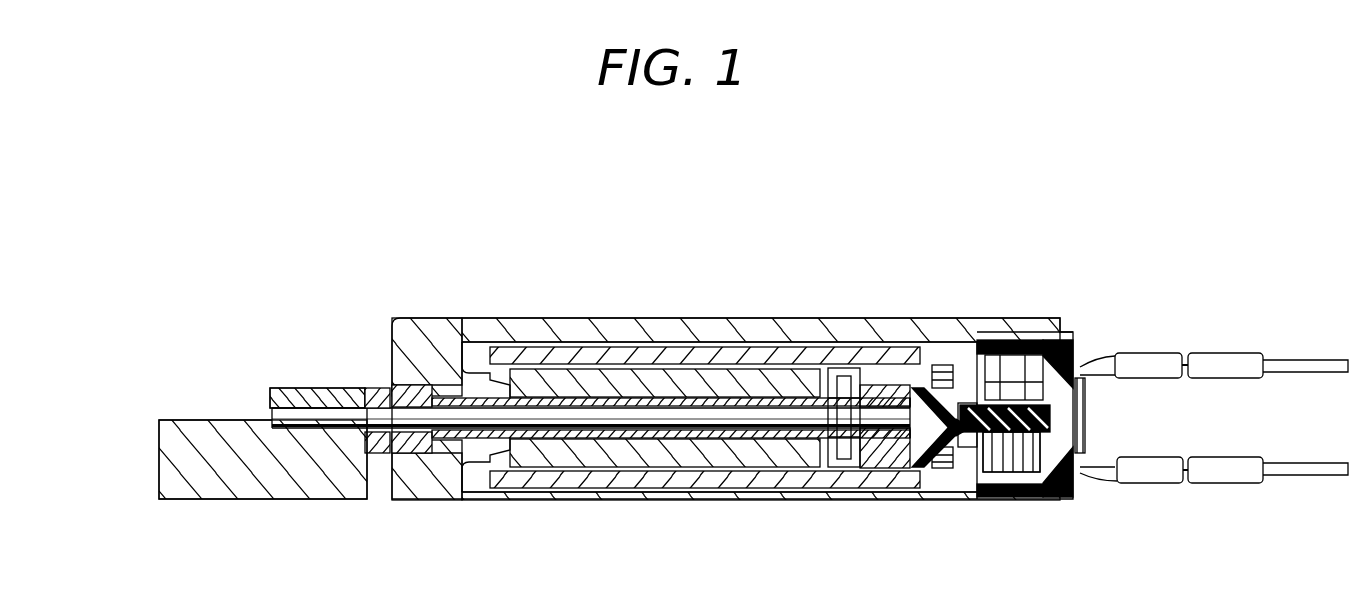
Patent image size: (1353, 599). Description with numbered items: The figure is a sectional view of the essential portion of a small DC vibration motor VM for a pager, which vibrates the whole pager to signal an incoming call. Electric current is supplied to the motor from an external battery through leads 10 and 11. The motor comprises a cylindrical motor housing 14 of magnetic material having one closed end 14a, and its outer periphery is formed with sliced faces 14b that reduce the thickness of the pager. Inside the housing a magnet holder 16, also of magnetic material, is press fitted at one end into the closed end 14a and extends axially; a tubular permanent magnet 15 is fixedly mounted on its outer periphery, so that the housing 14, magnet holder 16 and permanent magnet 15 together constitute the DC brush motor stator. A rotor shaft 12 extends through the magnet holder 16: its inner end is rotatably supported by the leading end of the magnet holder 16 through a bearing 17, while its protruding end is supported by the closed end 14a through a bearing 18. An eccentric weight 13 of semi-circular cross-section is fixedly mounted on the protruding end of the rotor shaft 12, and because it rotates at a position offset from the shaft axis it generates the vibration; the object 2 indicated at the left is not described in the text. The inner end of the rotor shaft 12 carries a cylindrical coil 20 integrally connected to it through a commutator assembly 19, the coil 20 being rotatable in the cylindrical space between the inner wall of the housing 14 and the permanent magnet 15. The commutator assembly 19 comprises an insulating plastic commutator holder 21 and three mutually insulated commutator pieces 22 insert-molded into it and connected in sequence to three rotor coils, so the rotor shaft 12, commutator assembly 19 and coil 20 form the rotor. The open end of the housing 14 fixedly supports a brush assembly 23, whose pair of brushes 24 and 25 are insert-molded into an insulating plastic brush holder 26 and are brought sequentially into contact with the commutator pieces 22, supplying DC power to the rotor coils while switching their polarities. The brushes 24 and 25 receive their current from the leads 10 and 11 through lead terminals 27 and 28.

The object to be measured / contact member 2 is at (138, 440).
The lead 10 is at (1245, 362).
The lead 11 is at (1235, 470).
The rotor shaft 12 is at (303, 413).
The eccentric weight 13 is at (200, 440).
The motor housing 14 is at (696, 310).
The closed end 14a is at (400, 322).
The sliced face 14b is at (568, 502).
The permanent magnet 15 is at (603, 378).
The magnet holder 16 is at (460, 443).
The bearing 17 is at (828, 370).
The bearing 18 is at (403, 383).
The commutator assembly 19 is at (942, 356).
The coil 20 is at (650, 455).
The commutator holder 21 is at (875, 470).
The commutator piece 22 is at (993, 375).
The brush assembly 23 is at (1093, 330).
The brush 24 is at (990, 472).
The brush 25 is at (1028, 504).
The brush holder 26 is at (1062, 492).
The lead terminal 27 is at (1093, 377).
The lead terminal 28 is at (1093, 460).
The vibration motor VM is at (443, 288).